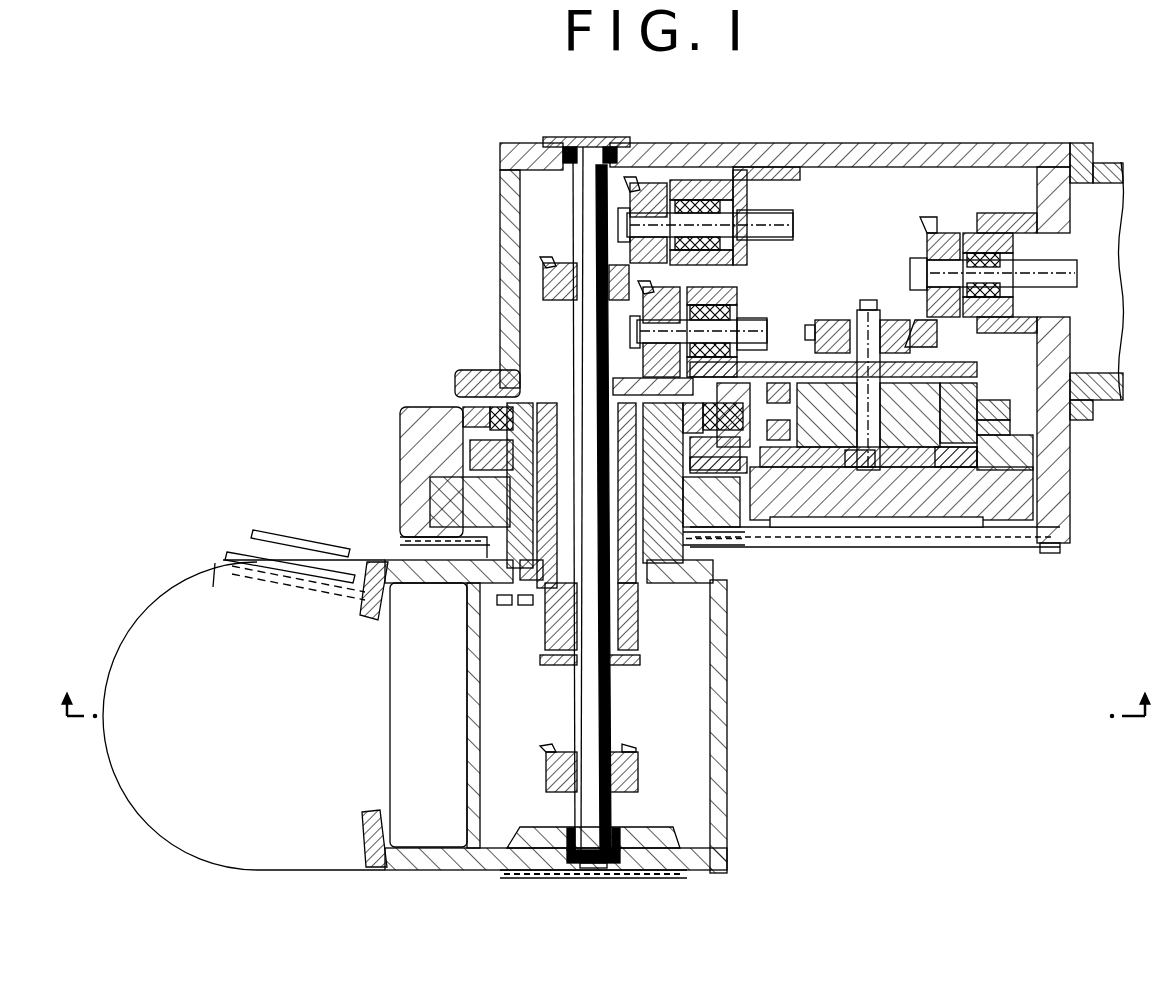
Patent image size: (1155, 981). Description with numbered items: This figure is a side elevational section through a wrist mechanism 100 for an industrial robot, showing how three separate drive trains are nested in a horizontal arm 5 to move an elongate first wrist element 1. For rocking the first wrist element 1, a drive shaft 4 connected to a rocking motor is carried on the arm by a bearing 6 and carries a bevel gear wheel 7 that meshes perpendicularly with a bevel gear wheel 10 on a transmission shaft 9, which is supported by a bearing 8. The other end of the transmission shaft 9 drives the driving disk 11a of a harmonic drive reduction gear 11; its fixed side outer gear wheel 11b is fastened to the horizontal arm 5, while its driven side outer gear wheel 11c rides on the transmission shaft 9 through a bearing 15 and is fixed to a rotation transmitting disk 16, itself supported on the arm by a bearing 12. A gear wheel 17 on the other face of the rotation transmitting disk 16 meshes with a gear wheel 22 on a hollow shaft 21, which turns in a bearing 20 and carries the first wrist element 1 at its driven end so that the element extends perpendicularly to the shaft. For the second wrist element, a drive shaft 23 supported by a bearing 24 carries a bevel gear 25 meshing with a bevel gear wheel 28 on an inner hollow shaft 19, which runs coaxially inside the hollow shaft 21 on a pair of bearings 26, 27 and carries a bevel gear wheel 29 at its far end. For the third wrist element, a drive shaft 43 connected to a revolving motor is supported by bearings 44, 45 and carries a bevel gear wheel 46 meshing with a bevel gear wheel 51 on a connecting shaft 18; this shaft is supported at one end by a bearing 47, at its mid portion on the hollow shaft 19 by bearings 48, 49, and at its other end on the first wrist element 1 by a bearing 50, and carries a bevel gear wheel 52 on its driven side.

The wrist mechanism 100 is at (605, 487).
The first wrist element 1 is at (714, 862).
The drive shaft 4 is at (1045, 260).
The horizontal arm 5 is at (875, 150).
The bearing 6 is at (978, 233).
The bevel gear wheel 7 is at (920, 240).
The bearing 8 is at (913, 352).
The transmission shaft 9 is at (868, 305).
The bevel gear wheel 10 is at (840, 320).
The harmonic drive reduction gear 11 is at (993, 378).
The driving disk 11a is at (807, 403).
The fixed side outer gear wheel 11b is at (1000, 400).
The driven side outer gear wheel 11c is at (997, 418).
The bearing 12 is at (983, 440).
The bearing 15 is at (853, 472).
The rotation transmitting disk 16 is at (950, 468).
The gear wheel 17 is at (893, 515).
The connecting shaft 18 is at (613, 703).
The hollow shaft 19 is at (645, 609).
The bearing 20 is at (450, 407).
The hollow shaft 21 is at (695, 573).
The gear wheel 22 is at (450, 497).
The drive shaft 23 is at (748, 328).
The bearing 24 is at (735, 295).
The bevel gear 25 is at (660, 312).
The bearing 26 is at (497, 383).
The bearing 27 is at (537, 603).
The bevel gear wheel 28 is at (543, 392).
The bevel gear wheel 29 is at (648, 659).
The drive shaft 43 is at (745, 215).
The bearing 44 is at (750, 175).
The bearing 45 is at (695, 180).
The bevel gear wheel 46 is at (650, 183).
The bearing 47 is at (575, 137).
The bearing 48 is at (557, 395).
The bearing 49 is at (542, 632).
The bearing 50 is at (576, 832).
The bevel gear wheel 51 is at (545, 283).
The bevel gear wheel 52 is at (635, 774).